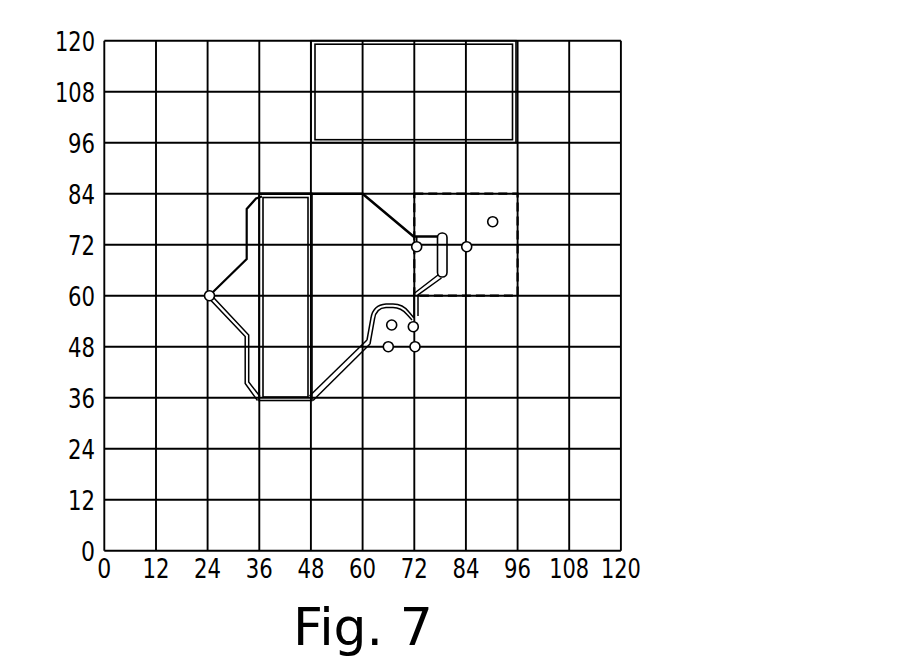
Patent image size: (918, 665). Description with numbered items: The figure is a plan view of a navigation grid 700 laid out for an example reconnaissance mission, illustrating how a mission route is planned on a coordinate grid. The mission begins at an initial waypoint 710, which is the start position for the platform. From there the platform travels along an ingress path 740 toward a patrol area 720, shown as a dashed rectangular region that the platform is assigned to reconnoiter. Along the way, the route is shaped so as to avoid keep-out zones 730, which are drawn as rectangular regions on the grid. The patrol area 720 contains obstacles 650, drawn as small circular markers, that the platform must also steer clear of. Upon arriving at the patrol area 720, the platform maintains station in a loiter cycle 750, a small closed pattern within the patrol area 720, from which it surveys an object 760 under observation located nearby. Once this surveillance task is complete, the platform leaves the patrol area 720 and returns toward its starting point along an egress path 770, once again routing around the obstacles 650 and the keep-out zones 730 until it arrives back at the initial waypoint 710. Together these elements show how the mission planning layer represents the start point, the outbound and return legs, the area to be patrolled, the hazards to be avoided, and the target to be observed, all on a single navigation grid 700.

The navigation grid 700 is at (686, 138).
The initial waypoint 710 is at (204, 293).
The patrol area 720 is at (518, 218).
The keep-out zones 730 is at (312, 83).
The ingress path 740 is at (246, 236).
The loiter cycle 750 is at (447, 266).
The object under observation 760 is at (420, 325).
The egress path 770 is at (328, 385).
The obstacles 650 is at (488, 219).